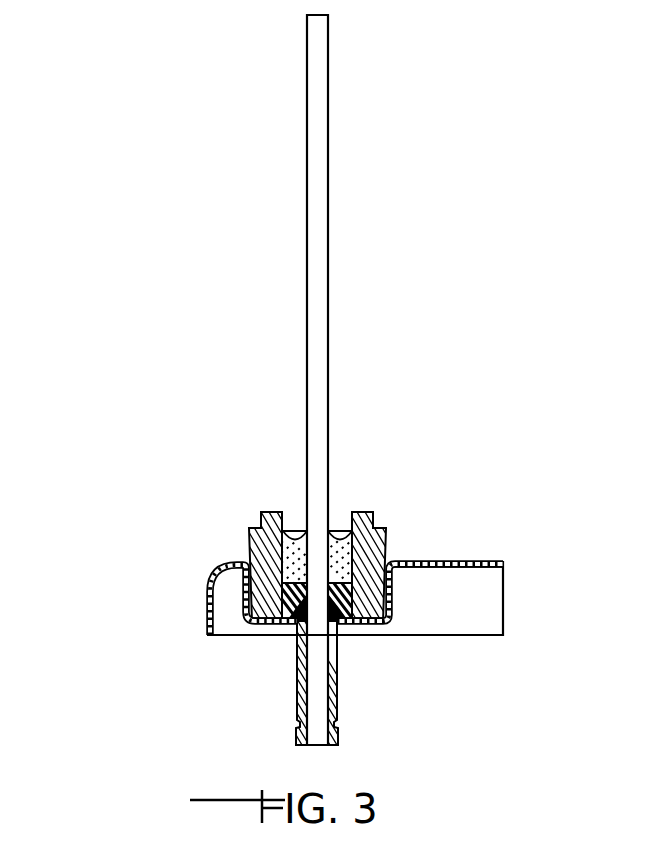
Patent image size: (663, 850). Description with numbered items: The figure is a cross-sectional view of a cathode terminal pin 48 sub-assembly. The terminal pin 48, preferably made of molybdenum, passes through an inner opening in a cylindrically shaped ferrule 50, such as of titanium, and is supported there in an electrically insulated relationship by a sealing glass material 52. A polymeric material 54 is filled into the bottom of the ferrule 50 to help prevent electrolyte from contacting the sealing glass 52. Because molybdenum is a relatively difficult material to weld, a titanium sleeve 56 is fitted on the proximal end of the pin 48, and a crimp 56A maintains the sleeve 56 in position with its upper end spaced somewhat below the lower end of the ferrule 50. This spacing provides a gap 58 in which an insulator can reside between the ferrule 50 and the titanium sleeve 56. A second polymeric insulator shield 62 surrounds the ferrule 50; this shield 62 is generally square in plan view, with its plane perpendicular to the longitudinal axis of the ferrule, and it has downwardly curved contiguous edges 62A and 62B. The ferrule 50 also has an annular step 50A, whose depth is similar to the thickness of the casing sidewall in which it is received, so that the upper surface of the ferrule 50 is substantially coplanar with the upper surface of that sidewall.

The cathode terminal pin 48 is at (328, 307).
The ferrule 50 is at (383, 536).
The annular step 50A is at (261, 529).
The sealing glass material 52 is at (338, 513).
The polymeric material 54 is at (344, 625).
The titanium sleeve 56 is at (297, 687).
The crimp 56A is at (338, 725).
The gap 58 is at (298, 638).
The second polymeric insulator shield 62 is at (311, 561).
The downwardly curved contiguous edge 62A is at (462, 604).
The downwardly curved contiguous edge 62B is at (207, 612).